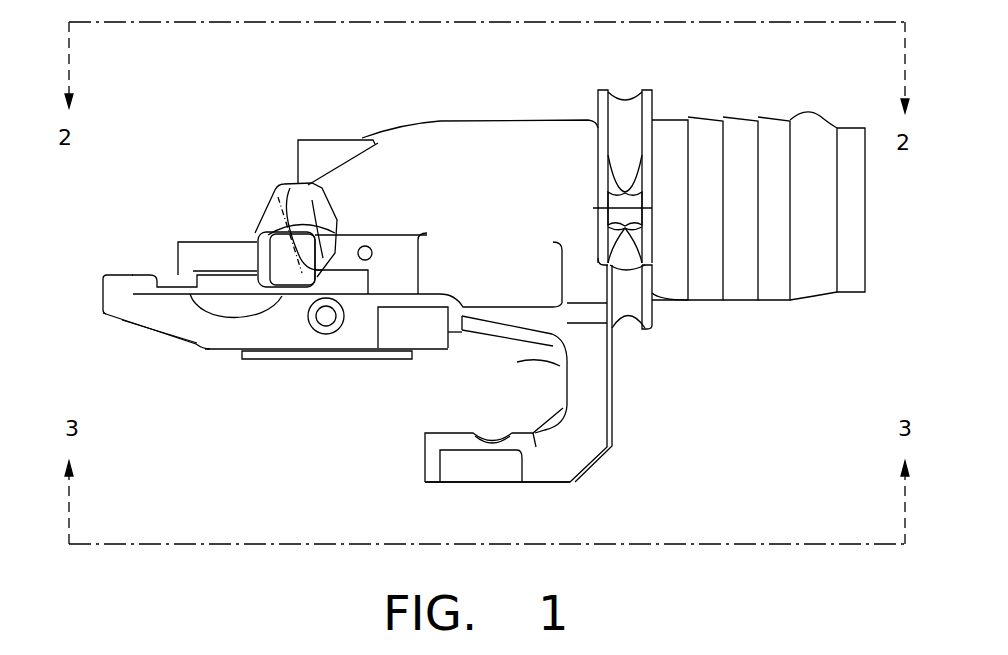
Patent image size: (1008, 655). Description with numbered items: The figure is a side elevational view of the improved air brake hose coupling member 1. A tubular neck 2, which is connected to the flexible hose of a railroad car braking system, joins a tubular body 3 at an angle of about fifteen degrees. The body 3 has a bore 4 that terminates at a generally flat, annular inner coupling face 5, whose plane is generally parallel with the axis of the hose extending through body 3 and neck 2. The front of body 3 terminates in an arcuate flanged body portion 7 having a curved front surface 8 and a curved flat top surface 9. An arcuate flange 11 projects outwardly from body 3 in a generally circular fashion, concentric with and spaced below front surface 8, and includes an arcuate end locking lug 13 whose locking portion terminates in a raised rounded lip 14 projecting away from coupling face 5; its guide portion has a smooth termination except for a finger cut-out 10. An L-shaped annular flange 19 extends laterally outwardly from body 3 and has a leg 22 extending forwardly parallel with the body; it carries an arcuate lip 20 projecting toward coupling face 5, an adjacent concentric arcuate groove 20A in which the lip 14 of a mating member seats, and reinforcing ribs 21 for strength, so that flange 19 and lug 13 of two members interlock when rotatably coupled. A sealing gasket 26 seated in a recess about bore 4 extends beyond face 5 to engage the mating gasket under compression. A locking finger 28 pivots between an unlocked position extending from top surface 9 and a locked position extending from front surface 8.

The coupling member 1 is at (526, 108).
The tubular neck 2 is at (798, 292).
The tubular body 3 is at (482, 137).
The bore 4 is at (866, 268).
The inner coupling face 5 is at (418, 353).
The arcuate flanged body portion 7 is at (175, 228).
The curved front surface 8 is at (173, 260).
The curved flat top surface 9 is at (210, 240).
The finger cut-out 10 is at (232, 310).
The arcuate flange 11 is at (148, 330).
The end locking lug 13 is at (88, 303).
The raised rounded lip 14 is at (128, 276).
The L-shaped annular flange 19 is at (605, 468).
The arcuate lip 20 is at (437, 432).
The arcuate groove 20A is at (483, 433).
The reinforcing ribs 21 is at (520, 355).
The leg 22 is at (550, 472).
The sealing gasket 26 is at (277, 359).
The locking finger 28 is at (257, 215).